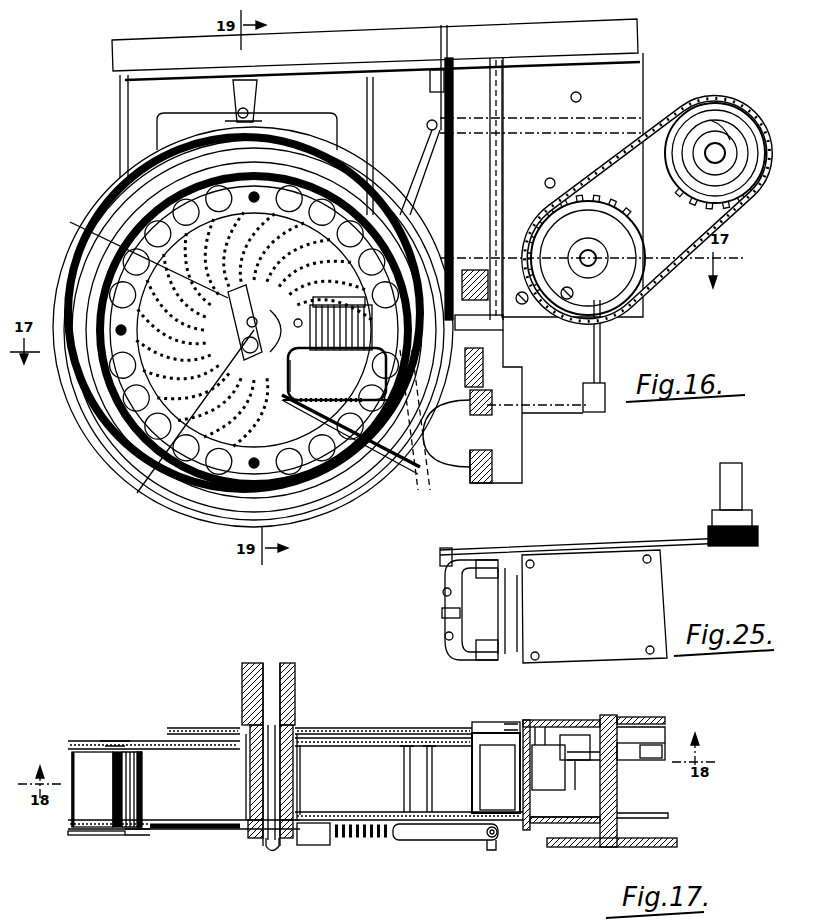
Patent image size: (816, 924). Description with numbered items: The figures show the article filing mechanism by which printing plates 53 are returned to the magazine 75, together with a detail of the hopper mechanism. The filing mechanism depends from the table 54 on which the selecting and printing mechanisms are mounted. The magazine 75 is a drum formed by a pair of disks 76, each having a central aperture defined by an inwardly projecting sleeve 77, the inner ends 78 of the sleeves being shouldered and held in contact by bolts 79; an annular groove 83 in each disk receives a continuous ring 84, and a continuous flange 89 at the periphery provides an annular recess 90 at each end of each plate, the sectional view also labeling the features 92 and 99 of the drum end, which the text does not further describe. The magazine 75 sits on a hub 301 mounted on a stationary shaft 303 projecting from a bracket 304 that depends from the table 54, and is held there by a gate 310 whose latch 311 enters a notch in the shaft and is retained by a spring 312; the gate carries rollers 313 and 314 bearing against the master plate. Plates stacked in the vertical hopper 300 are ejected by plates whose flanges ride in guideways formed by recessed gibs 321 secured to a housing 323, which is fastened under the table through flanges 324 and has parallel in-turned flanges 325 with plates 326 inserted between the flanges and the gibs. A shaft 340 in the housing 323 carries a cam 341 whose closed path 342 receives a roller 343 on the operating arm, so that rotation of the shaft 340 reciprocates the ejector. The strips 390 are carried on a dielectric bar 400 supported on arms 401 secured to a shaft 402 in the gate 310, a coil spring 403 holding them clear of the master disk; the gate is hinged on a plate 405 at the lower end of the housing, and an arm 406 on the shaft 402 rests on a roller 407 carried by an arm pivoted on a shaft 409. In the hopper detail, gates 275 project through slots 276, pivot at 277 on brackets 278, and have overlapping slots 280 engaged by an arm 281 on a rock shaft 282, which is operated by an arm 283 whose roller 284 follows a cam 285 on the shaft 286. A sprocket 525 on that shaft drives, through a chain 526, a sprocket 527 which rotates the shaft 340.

In FIG. 16, the printing plates 53 is at (468, 270).
In FIG. 17, the printing plates 53 is at (92, 789).
In FIG. 16, the table 54 is at (292, 44).
In FIG. 16, the magazine 75 is at (96, 444).
In FIG. 17, the plates or disks 76 is at (184, 750).
In FIG. 17, the inwardly projecting sleeve 77 is at (244, 763).
In FIG. 17, the inner ends of the sleeves 78 is at (294, 790).
In FIG. 17, the bolts 79 is at (142, 795).
In FIG. 17, the annular groove 83 is at (128, 836).
In FIG. 17, the continuous ring 84 is at (125, 750).
In FIG. 16, the continuous flange 89 is at (296, 530).
In FIG. 17, the continuous flange 89 is at (86, 836).
In FIG. 17, the continuous annular recess 90 is at (70, 744).
In FIG. 17, the clip 92 is at (112, 741).
In FIG. 17, the end wall 99 is at (70, 780).
In FIG. 16, the gates 275 is at (430, 82).
In FIG. 25, the gates 275 is at (488, 560).
In FIG. 25, the slots 276 is at (510, 562).
In FIG. 25, the pivot 277 is at (440, 592).
In FIG. 16, the brackets 278 is at (443, 30).
In FIG. 25, the brackets 278 is at (444, 580).
In FIG. 25, the longitudinally extending slots 280 is at (444, 628).
In FIG. 16, the arm 281 is at (430, 105).
In FIG. 25, the arm 281 is at (440, 613).
In FIG. 16, the rock shaft 282 is at (434, 134).
In FIG. 25, the rock shaft 282 is at (440, 560).
In FIG. 16, the arm 283 is at (648, 122).
In FIG. 25, the arm 283 is at (596, 548).
In FIG. 16, the roller 284 is at (718, 115).
In FIG. 25, the roller 284 is at (726, 546).
In FIG. 16, the cam 285 is at (722, 205).
In FIG. 25, the cam 285 is at (712, 530).
In FIG. 16, the shaft 286 is at (730, 135).
In FIG. 25, the shaft 286 is at (720, 481).
In FIG. 16, the vertical hopper 300 is at (474, 189).
In FIG. 17, the vertical hopper 300 is at (496, 773).
In FIG. 17, the hub 301 is at (300, 762).
In FIG. 17, the stationary shaft 303 is at (271, 664).
In FIG. 17, the bracket 304 is at (295, 676).
In FIG. 16, the gate 310 is at (354, 444).
In FIG. 17, the gate 310 is at (420, 840).
In FIG. 16, the latch 311 is at (244, 304).
In FIG. 16, the spring 312 is at (280, 313).
In FIG. 16, the roller 313 is at (229, 326).
In FIG. 16, the roller 314 is at (394, 190).
In FIG. 17, the recessed gibs 321 is at (488, 730).
In FIG. 16, the housing 323 is at (541, 185).
In FIG. 17, the housing 323 is at (556, 722).
In FIG. 25, the flanges 324 is at (594, 606).
In FIG. 17, the parallel in-turned flanges 325 is at (650, 717).
In FIG. 17, the plates 326 is at (512, 726).
In FIG. 16, the shaft 340 is at (608, 326).
In FIG. 17, the shaft 340 is at (608, 847).
In FIG. 17, the cam 341 is at (652, 744).
In FIG. 17, the closed path 342 is at (654, 760).
In FIG. 17, the roller 343 is at (582, 740).
In FIG. 16, the strips 390 is at (434, 218).
In FIG. 16, the bar 400 is at (312, 470).
In FIG. 16, the arms 401 is at (306, 376).
In FIG. 16, the shaft 402 is at (428, 478).
In FIG. 16, the coil spring 403 is at (348, 470).
In FIG. 16, the plate 405 is at (519, 399).
In FIG. 16, the arm 406 is at (486, 392).
In FIG. 16, the roller 407 is at (500, 430).
In FIG. 16, the shaft 409 is at (548, 414).
In FIG. 16, the sprocket 525 is at (735, 195).
In FIG. 16, the chain 526 is at (665, 280).
In FIG. 16, the sprocket 527 is at (647, 297).
In FIG. 17, the sprocket 527 is at (654, 848).